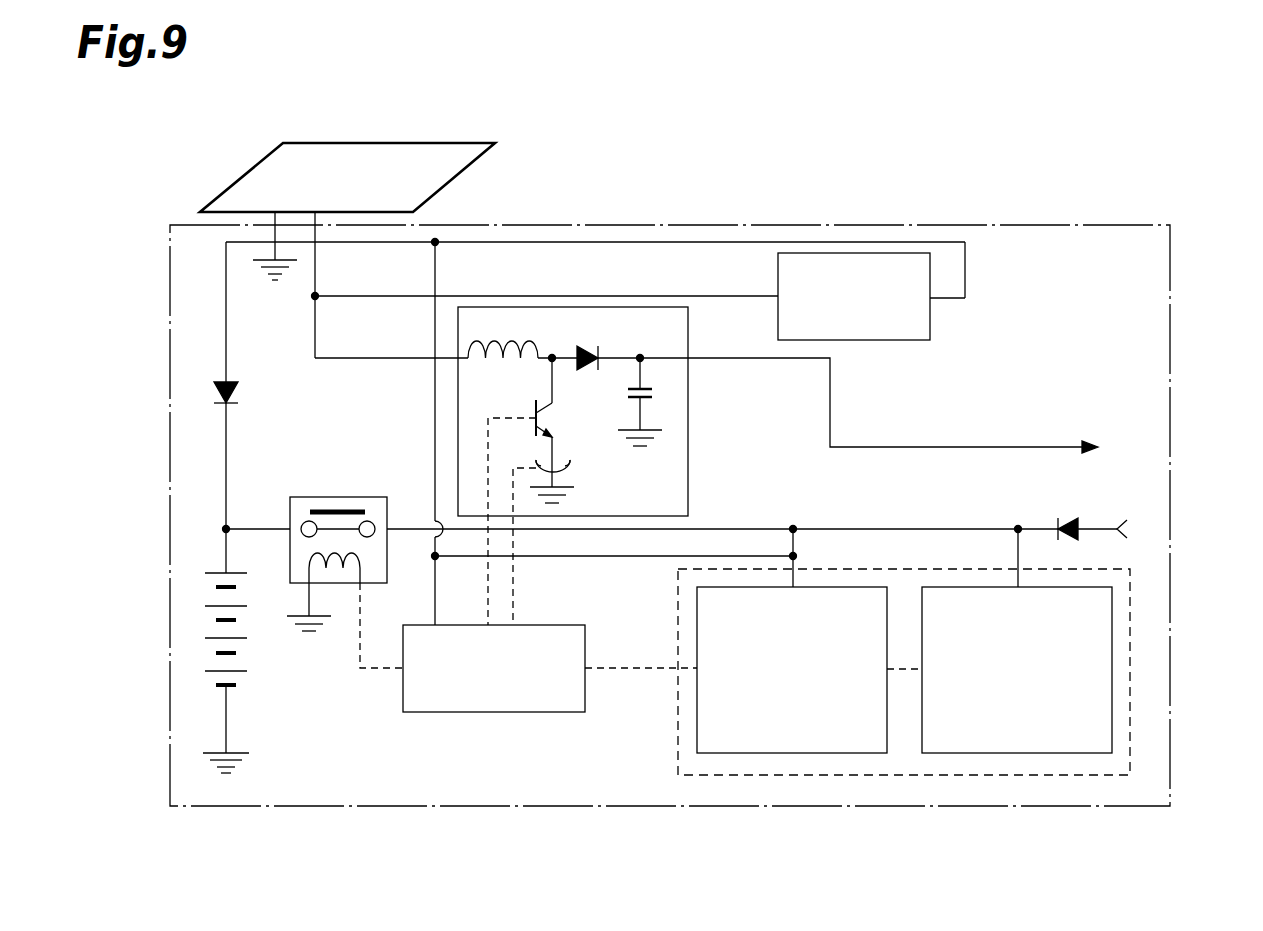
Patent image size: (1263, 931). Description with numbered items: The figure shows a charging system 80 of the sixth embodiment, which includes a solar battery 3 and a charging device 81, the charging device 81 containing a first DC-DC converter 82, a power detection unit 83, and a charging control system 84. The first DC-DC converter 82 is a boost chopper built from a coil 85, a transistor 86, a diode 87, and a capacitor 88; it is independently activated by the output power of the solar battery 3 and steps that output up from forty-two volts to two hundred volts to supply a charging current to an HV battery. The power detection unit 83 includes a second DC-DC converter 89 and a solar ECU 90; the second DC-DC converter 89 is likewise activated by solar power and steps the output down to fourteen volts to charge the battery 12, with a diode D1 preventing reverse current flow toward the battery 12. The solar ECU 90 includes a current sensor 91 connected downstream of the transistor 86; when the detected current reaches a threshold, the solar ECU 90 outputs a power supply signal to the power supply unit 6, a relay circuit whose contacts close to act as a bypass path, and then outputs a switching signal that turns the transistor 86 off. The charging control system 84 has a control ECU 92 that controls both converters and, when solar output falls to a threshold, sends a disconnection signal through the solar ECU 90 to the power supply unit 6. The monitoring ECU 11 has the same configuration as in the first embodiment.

The charging system 80 is at (1160, 118).
The charging device 81 is at (1043, 225).
The solar battery 3 is at (371, 143).
The diode D1 is at (240, 393).
The battery 12 is at (212, 572).
The power supply unit 6 is at (343, 497).
The power detection unit 83 is at (725, 513).
The first DC-DC converter 82 is at (527, 307).
The coil 85 is at (538, 346).
The diode 87 is at (601, 350).
The capacitor 88 is at (655, 397).
The transistor 86 is at (553, 405).
The current sensor 91 is at (566, 478).
The second DC-DC converter 89 is at (930, 312).
The solar ECU 90 is at (485, 712).
The charging control system 84 is at (1130, 656).
The control ECU 92 is at (788, 755).
The monitoring ECU 11 is at (1006, 755).